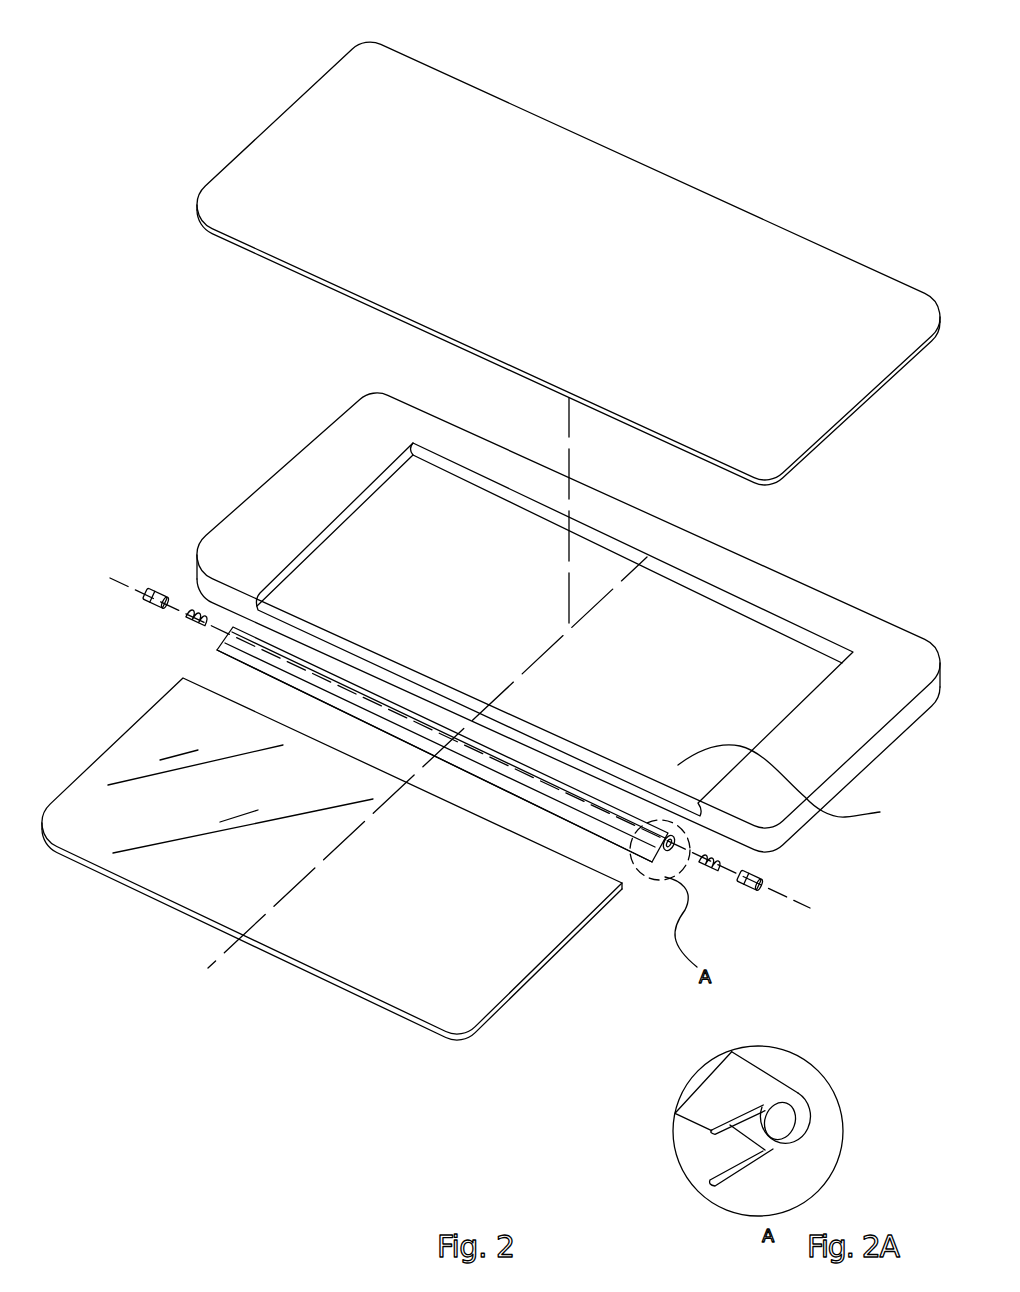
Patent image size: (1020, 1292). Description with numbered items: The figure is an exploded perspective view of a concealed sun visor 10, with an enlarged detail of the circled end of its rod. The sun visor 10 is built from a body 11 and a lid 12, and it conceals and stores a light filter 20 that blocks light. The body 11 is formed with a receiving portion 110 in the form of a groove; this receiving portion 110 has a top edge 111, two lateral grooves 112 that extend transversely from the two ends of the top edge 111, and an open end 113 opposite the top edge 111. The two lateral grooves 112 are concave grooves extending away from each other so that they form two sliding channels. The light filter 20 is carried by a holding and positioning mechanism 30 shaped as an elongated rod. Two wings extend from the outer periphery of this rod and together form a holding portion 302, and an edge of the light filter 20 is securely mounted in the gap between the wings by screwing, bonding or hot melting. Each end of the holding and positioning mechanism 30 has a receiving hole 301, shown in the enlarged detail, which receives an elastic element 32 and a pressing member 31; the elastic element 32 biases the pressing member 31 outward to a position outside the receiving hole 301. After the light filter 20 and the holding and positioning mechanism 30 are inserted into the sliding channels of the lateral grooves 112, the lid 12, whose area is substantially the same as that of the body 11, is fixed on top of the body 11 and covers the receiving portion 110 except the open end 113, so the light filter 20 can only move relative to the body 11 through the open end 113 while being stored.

In FIG. 2, the sun visor 10 is at (580, 614).
In FIG. 2, the body 11 is at (877, 647).
In FIG. 2, the lid 12 is at (262, 173).
In FIG. 2, the receiving portion 110 is at (704, 655).
In FIG. 2, the top edge 111 is at (493, 488).
In FIG. 2, the lateral grooves 112 is at (322, 543).
In FIG. 2, the open end 113 is at (880, 812).
In FIG. 2, the light filter 20 is at (207, 887).
In FIG. 2, the holding and positioning mechanism 30 is at (432, 757).
In FIG. 2A, the holding and positioning mechanism 30 is at (756, 1101).
In FIG. 2A, the receiving hole 301 is at (778, 1117).
In FIG. 2, the holding portion 302 is at (222, 650).
In FIG. 2A, the holding portion 302 is at (718, 1152).
In FIG. 2, the pressing member 31 is at (140, 592).
In FIG. 2, the elastic element 32 is at (183, 618).